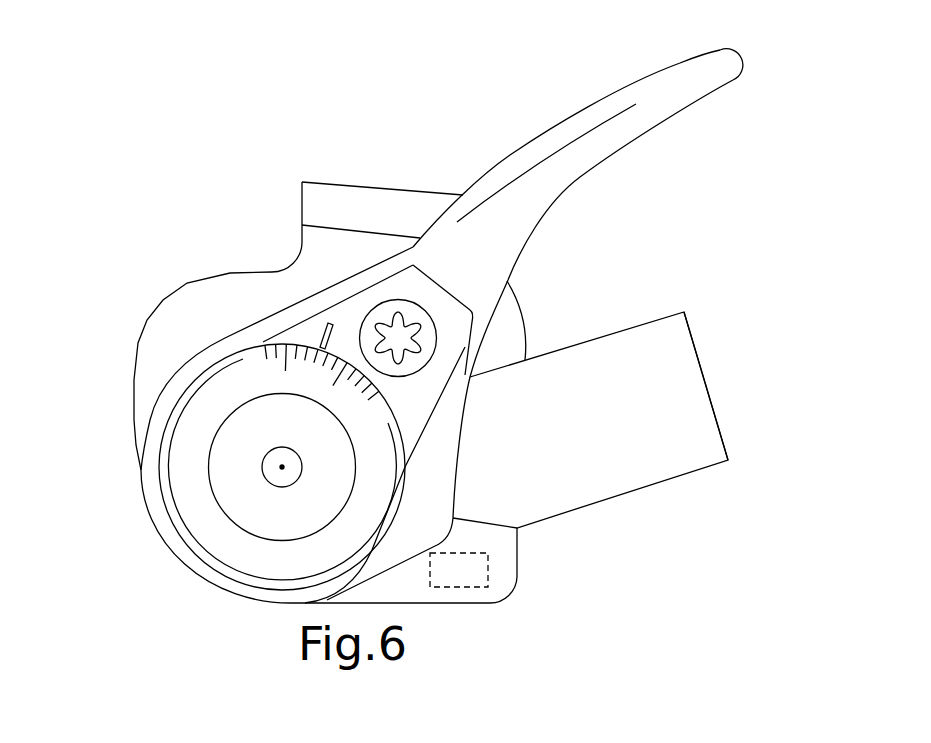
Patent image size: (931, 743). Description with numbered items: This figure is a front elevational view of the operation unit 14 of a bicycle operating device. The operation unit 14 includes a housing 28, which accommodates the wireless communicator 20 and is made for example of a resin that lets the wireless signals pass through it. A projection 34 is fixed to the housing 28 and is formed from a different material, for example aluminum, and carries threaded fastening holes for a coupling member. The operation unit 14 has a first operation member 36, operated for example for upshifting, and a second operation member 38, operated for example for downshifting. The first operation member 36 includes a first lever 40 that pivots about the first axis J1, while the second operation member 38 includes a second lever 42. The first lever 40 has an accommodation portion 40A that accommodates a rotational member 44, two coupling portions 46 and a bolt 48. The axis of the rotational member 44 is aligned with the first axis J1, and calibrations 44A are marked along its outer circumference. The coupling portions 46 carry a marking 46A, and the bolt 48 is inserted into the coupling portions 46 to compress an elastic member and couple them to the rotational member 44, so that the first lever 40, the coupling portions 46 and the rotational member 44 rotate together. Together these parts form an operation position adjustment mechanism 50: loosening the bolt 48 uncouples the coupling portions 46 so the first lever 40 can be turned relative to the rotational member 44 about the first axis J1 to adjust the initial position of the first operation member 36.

The operation unit 14 is at (146, 126).
The wireless communicator 20 is at (490, 572).
The housing 28 is at (133, 328).
The projection 34 is at (386, 183).
The first operation member 36 is at (755, 56).
The second operation member 38 is at (721, 330).
The first lever 40 is at (604, 152).
The accommodation portion 40A is at (425, 410).
The second lever 42 is at (700, 412).
The rotational member 44 is at (190, 510).
The calibrations 44A is at (340, 392).
The coupling portions 46 is at (467, 345).
The marking 46A is at (326, 328).
The bolt 48 is at (418, 305).
The operation position adjustment mechanism 50 is at (176, 580).
The first axis J1 is at (282, 467).